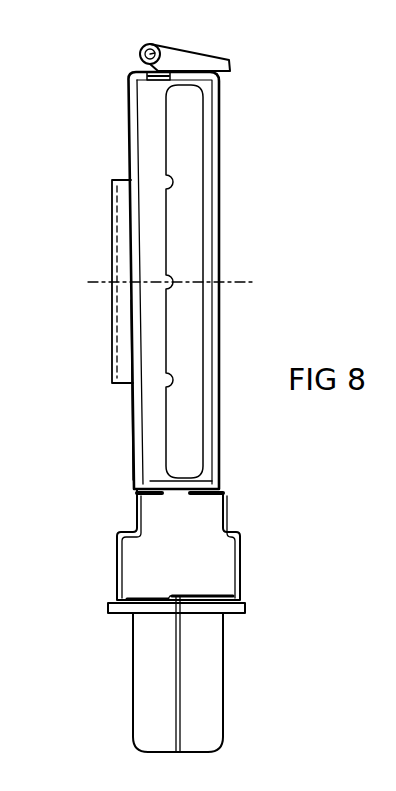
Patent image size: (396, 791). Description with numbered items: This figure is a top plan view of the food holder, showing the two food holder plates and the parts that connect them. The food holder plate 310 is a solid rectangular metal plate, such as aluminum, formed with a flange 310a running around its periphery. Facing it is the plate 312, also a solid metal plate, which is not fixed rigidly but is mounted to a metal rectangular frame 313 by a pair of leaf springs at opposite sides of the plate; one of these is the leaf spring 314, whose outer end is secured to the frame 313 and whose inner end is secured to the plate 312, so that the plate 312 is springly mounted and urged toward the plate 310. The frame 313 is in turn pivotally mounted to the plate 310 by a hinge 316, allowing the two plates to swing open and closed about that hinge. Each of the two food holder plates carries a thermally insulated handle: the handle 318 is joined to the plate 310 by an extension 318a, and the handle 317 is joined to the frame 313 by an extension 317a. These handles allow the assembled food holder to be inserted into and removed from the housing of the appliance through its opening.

The food holder plate 310 is at (213, 213).
The flange 310a is at (170, 86).
The plate 312 is at (163, 347).
The rectangular frame 313 is at (131, 403).
The leaf spring 314 is at (113, 338).
The hinge 316 is at (143, 62).
The thermally insulated handle 317 is at (163, 605).
The extension 317a is at (120, 557).
The thermally insulated handle 318 is at (207, 60).
The extension 318a is at (222, 503).